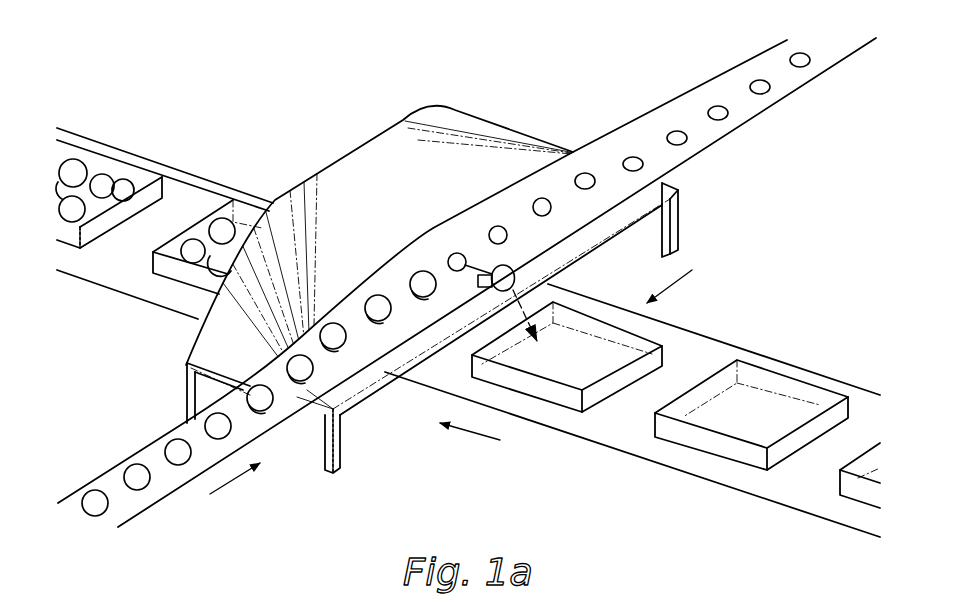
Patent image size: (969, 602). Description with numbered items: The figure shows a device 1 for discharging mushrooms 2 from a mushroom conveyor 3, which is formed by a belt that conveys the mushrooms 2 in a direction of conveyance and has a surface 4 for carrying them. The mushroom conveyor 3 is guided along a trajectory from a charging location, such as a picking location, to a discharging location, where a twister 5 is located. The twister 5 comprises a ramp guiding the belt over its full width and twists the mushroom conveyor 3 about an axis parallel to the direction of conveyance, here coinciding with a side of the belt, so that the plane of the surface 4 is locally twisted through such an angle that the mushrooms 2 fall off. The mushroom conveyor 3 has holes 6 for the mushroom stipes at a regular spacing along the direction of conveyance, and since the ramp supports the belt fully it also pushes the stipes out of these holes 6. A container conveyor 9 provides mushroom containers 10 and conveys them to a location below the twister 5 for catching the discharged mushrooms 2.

The device 1 is at (307, 74).
The mushrooms 2 is at (107, 176).
The mushroom conveyor 3 is at (140, 507).
The surface 4 is at (153, 458).
The twister 5 is at (393, 187).
The holes 6 is at (633, 158).
The container conveyor 9 is at (615, 436).
The mushroom containers 10 is at (93, 163).